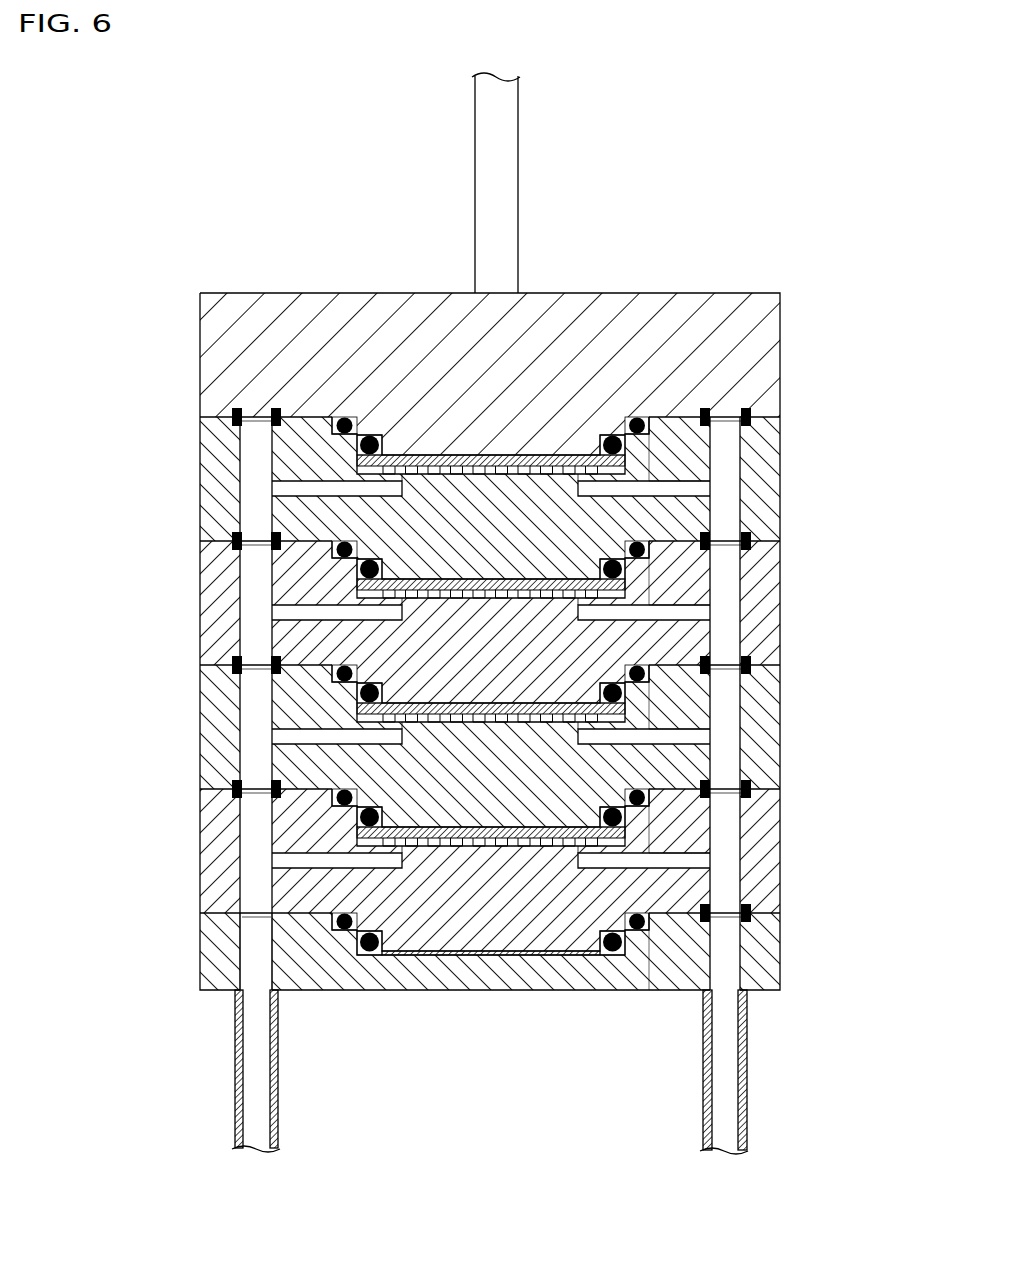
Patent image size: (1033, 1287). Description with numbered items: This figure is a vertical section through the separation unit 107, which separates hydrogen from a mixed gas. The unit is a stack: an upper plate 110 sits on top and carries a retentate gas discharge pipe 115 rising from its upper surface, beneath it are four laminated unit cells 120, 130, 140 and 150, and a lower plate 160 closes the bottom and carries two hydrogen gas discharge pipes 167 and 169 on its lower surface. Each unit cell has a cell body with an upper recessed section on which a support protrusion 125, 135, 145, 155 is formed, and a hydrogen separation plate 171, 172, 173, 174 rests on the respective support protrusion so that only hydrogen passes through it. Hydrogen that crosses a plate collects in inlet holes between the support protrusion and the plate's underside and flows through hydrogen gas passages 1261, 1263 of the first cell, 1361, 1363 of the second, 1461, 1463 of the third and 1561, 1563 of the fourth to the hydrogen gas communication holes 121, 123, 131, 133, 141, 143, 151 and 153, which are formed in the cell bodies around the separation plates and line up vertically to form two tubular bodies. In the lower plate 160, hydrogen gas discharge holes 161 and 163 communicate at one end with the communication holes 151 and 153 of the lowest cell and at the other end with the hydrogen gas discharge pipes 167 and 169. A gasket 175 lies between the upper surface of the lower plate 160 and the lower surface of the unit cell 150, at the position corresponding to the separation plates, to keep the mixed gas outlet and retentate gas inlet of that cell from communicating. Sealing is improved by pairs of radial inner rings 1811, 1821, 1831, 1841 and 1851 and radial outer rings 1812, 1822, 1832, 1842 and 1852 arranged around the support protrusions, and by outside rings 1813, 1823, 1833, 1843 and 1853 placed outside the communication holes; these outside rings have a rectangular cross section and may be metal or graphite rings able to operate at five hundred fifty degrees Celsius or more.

The separation unit 107 is at (683, 188).
The upper plate 110 is at (175, 345).
The retentate gas discharge pipe 115 is at (518, 153).
The unit cell 120 is at (118, 464).
The hydrogen gas communication hole 121 is at (730, 491).
The hydrogen gas communication hole 123 is at (255, 510).
The support protrusion 125 is at (490, 498).
The hydrogen gas passage 1261 is at (665, 481).
The hydrogen gas passage 1263 is at (276, 487).
The unit cell 130 is at (118, 595).
The hydrogen gas communication hole 131 is at (730, 615).
The hydrogen gas communication hole 133 is at (255, 634).
The support protrusion 135 is at (490, 621).
The hydrogen gas passage 1361 is at (665, 605).
The hydrogen gas passage 1363 is at (276, 611).
The unit cell 140 is at (118, 710).
The hydrogen gas communication hole 141 is at (730, 739).
The hydrogen gas communication hole 143 is at (255, 759).
The support protrusion 145 is at (490, 746).
The hydrogen gas passage 1461 is at (665, 729).
The hydrogen gas passage 1463 is at (276, 735).
The unit cell 150 is at (118, 835).
The hydrogen gas communication hole 151 is at (730, 863).
The hydrogen gas communication hole 153 is at (255, 884).
The support protrusion 155 is at (490, 870).
The hydrogen gas passage 1561 is at (665, 853).
The hydrogen gas passage 1563 is at (276, 859).
The lower plate 160 is at (118, 954).
The hydrogen gas discharge hole 161 is at (730, 950).
The hydrogen gas discharge hole 163 is at (258, 948).
The hydrogen gas discharge pipe 167 is at (703, 1083).
The hydrogen gas discharge pipe 169 is at (279, 1082).
The hydrogen separation plate 171 is at (481, 456).
The hydrogen separation plate 172 is at (481, 580).
The hydrogen separation plate 173 is at (481, 704).
The hydrogen separation plate 174 is at (481, 828).
The gasket 175 is at (485, 957).
The radial inner ring 1811 is at (610, 445).
The radial outer ring 1812 is at (638, 425).
The outside ring 1813 is at (706, 409).
The radial inner ring 1821 is at (612, 563).
The radial outer ring 1822 is at (636, 547).
The outside ring 1823 is at (752, 545).
The radial inner ring 1831 is at (612, 687).
The radial outer ring 1832 is at (636, 671).
The outside ring 1833 is at (752, 669).
The radial inner ring 1841 is at (612, 811).
The radial outer ring 1842 is at (636, 795).
The outside ring 1843 is at (752, 793).
The radial inner ring 1851 is at (610, 935).
The radial outer ring 1852 is at (630, 922).
The outside ring 1853 is at (752, 917).